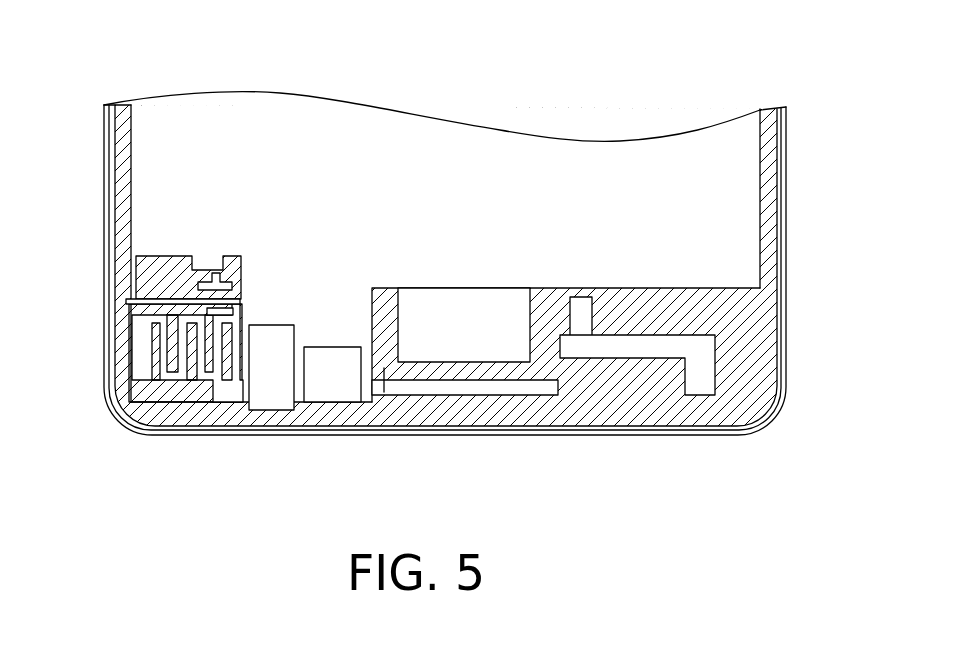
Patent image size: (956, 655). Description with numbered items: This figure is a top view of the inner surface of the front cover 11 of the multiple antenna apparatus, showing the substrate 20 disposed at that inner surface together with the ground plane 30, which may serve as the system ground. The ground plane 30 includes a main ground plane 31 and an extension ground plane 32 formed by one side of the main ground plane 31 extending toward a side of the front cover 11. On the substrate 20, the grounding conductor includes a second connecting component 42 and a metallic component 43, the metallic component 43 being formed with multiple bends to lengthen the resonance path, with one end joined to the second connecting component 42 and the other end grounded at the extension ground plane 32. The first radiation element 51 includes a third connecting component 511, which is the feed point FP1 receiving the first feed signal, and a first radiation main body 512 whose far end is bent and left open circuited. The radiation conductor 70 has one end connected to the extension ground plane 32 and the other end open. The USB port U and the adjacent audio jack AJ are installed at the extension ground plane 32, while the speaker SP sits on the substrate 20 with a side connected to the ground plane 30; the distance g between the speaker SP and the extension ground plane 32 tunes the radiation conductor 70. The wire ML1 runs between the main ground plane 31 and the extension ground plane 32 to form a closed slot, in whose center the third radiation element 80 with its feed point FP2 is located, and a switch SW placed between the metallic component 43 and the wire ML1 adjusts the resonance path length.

The front cover 11 is at (128, 72).
The substrate 20 is at (747, 403).
The ground plane 30 is at (396, 115).
The main ground plane 31 is at (391, 138).
The extension ground plane 32 is at (332, 379).
The second connecting component 42 is at (138, 399).
The metallic component 43 is at (171, 388).
The first radiation element 51 is at (603, 349).
The third connecting component 511 is at (626, 280).
The first radiation main body 512 is at (610, 350).
The radiation conductor 70 is at (457, 393).
The third radiation element 80 is at (191, 245).
The wire ML1 is at (130, 289).
The switch SW is at (233, 312).
The feed point FP1 is at (608, 297).
The feed point FP2 is at (215, 277).
The speaker SP is at (472, 285).
The audio jack AJ is at (270, 382).
The USB port U is at (330, 380).
The distance g is at (338, 263).